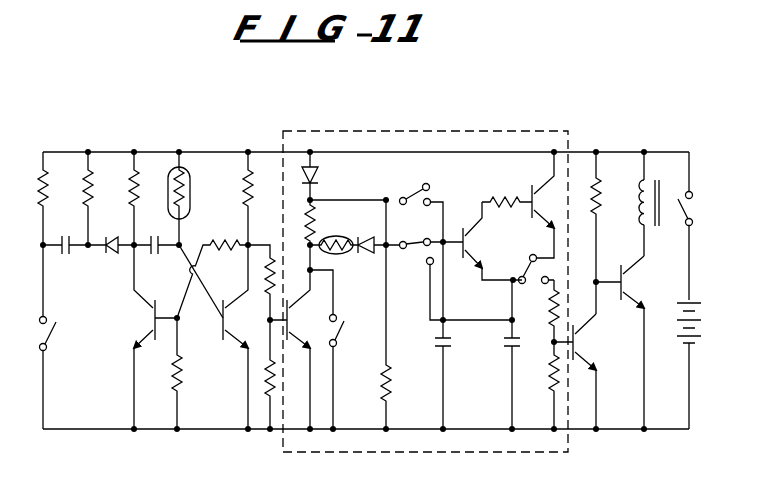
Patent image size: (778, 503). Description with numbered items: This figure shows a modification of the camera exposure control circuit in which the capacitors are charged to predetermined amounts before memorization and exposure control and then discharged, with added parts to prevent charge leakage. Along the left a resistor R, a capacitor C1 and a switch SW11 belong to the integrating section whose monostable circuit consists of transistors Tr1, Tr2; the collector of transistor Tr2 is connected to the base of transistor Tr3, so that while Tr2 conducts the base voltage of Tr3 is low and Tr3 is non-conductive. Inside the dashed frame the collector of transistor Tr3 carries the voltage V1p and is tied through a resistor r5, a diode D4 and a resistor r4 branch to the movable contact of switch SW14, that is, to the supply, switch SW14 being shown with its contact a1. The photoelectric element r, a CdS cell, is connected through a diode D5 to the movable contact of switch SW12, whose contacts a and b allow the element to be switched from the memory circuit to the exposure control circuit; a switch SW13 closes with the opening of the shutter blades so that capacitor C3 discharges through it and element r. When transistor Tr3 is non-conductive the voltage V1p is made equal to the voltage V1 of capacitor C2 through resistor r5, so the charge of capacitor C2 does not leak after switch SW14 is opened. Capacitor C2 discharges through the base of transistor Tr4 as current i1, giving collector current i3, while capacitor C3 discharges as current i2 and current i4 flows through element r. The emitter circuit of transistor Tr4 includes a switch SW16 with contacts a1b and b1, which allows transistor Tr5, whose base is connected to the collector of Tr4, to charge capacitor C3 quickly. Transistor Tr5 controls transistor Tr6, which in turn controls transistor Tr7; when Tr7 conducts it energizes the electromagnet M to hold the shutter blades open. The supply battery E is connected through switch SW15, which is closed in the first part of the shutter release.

The resistor R is at (186, 198).
The capacitor C1 is at (156, 235).
The switch SW11 is at (67, 373).
The transistor Tr1 is at (155, 337).
The transistor Tr2 is at (223, 337).
The transistor Tr3 is at (290, 349).
The diode D4 is at (319, 176).
The resistor r5 is at (301, 222).
The collector voltage V1p is at (298, 259).
The photoelectric element r is at (332, 236).
The diode D5 is at (375, 234).
The switch SW13 is at (343, 349).
The resistor r4 is at (393, 337).
The switch SW14 is at (433, 205).
The contact a1 is at (427, 214).
The switch SW12 is at (415, 280).
The contact a is at (399, 229).
The contact b is at (440, 261).
The capacitor voltage V1 is at (456, 227).
The transistor Tr4 is at (498, 297).
The base discharge current i1 is at (458, 249).
The collector current i3 is at (493, 218).
The capacitor C2 is at (453, 374).
The photoelectric element current i4 is at (490, 333).
The capacitor C3 is at (521, 354).
The discharge current i2 is at (521, 316).
The switch SW16 is at (537, 284).
The switch contact a1 a1b is at (521, 259).
The switch contact b1 is at (555, 271).
The transistor Tr5 is at (558, 205).
The transistor Tr6 is at (576, 371).
The transistor Tr7 is at (620, 342).
The electromagnet M is at (656, 204).
The switch SW15 is at (707, 226).
The battery E is at (696, 366).